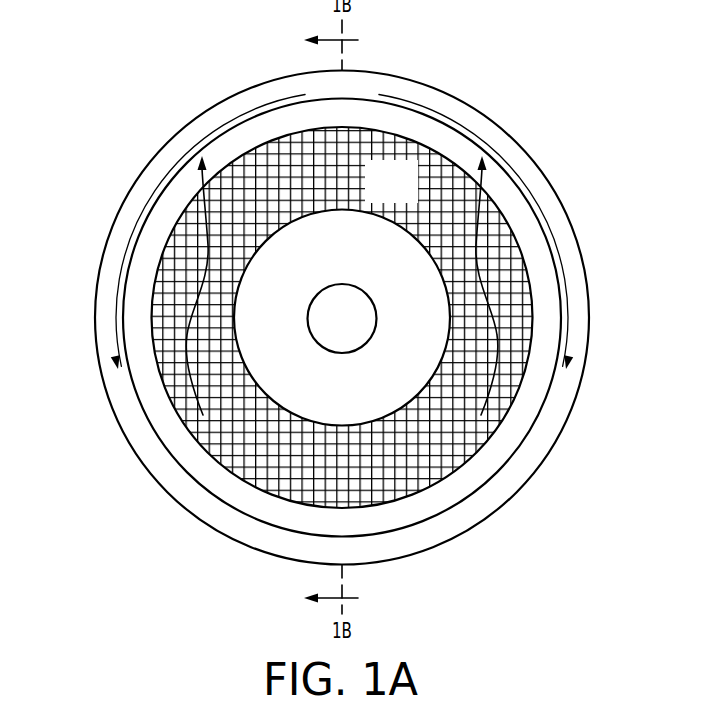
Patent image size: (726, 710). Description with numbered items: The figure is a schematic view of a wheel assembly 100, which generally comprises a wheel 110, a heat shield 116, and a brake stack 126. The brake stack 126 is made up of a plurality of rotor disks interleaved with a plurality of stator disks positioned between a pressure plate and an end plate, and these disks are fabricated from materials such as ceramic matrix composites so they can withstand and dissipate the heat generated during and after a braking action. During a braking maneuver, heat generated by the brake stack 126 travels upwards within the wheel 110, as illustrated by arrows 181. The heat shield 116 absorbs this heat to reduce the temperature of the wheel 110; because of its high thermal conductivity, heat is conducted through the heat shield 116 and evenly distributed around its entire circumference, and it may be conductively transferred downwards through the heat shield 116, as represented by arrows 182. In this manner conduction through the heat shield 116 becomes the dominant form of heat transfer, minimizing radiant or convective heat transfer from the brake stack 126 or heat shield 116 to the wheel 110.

The wheel assembly 100 is at (153, 96).
The wheel 110 is at (582, 252).
The heat shield 116 is at (542, 410).
The brake stack 126 is at (412, 195).
The arrows 181 is at (190, 312).
The arrows 182 is at (165, 177).